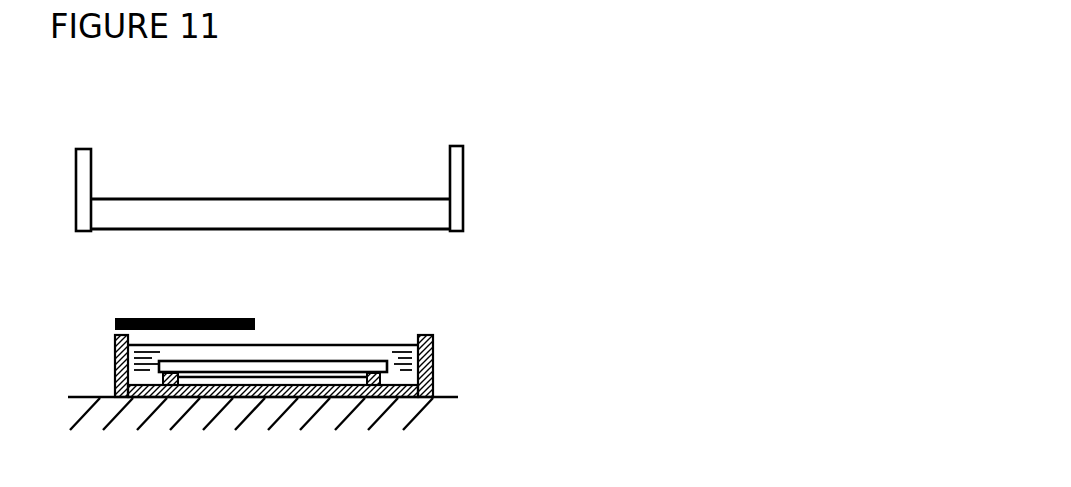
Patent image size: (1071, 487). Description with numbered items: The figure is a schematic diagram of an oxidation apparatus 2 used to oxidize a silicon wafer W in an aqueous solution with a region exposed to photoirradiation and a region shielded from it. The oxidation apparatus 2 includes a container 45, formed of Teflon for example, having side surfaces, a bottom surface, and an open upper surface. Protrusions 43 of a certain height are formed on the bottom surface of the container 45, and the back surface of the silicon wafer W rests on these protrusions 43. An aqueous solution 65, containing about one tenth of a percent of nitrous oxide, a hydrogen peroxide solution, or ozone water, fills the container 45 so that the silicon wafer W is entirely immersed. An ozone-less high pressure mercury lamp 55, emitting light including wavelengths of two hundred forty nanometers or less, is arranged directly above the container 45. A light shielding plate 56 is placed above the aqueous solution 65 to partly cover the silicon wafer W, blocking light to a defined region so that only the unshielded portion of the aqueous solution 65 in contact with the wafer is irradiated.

The oxidation apparatus 2 is at (458, 133).
The ozone-less high pressure mercury lamp 55 is at (463, 207).
The light shielding plate 56 is at (145, 317).
The aqueous solution 65 is at (393, 353).
The protrusions 43 is at (163, 378).
The container 45 is at (433, 361).
The silicon wafer W is at (317, 360).